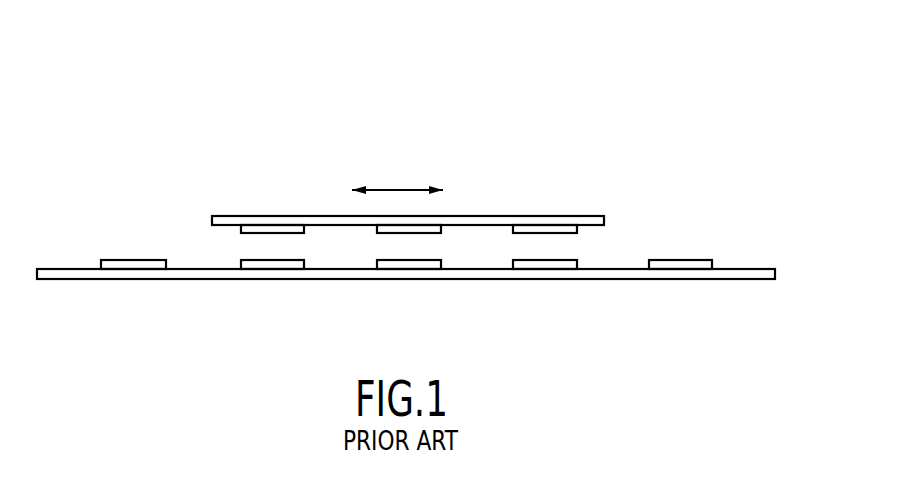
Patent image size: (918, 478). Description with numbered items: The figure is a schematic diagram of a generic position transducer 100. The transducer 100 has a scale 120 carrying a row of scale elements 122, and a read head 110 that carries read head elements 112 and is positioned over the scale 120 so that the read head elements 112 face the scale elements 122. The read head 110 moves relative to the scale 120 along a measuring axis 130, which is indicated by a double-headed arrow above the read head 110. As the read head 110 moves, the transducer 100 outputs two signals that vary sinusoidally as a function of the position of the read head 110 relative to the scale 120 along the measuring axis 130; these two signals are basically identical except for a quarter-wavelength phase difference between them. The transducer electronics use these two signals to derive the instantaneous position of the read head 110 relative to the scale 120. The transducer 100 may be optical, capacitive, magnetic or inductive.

The transducer 100 is at (442, 141).
The read head 110 is at (434, 190).
The read head elements 112 is at (243, 231).
The scale 120 is at (756, 255).
The scale elements 122 is at (671, 259).
The measuring axis 130 is at (398, 190).